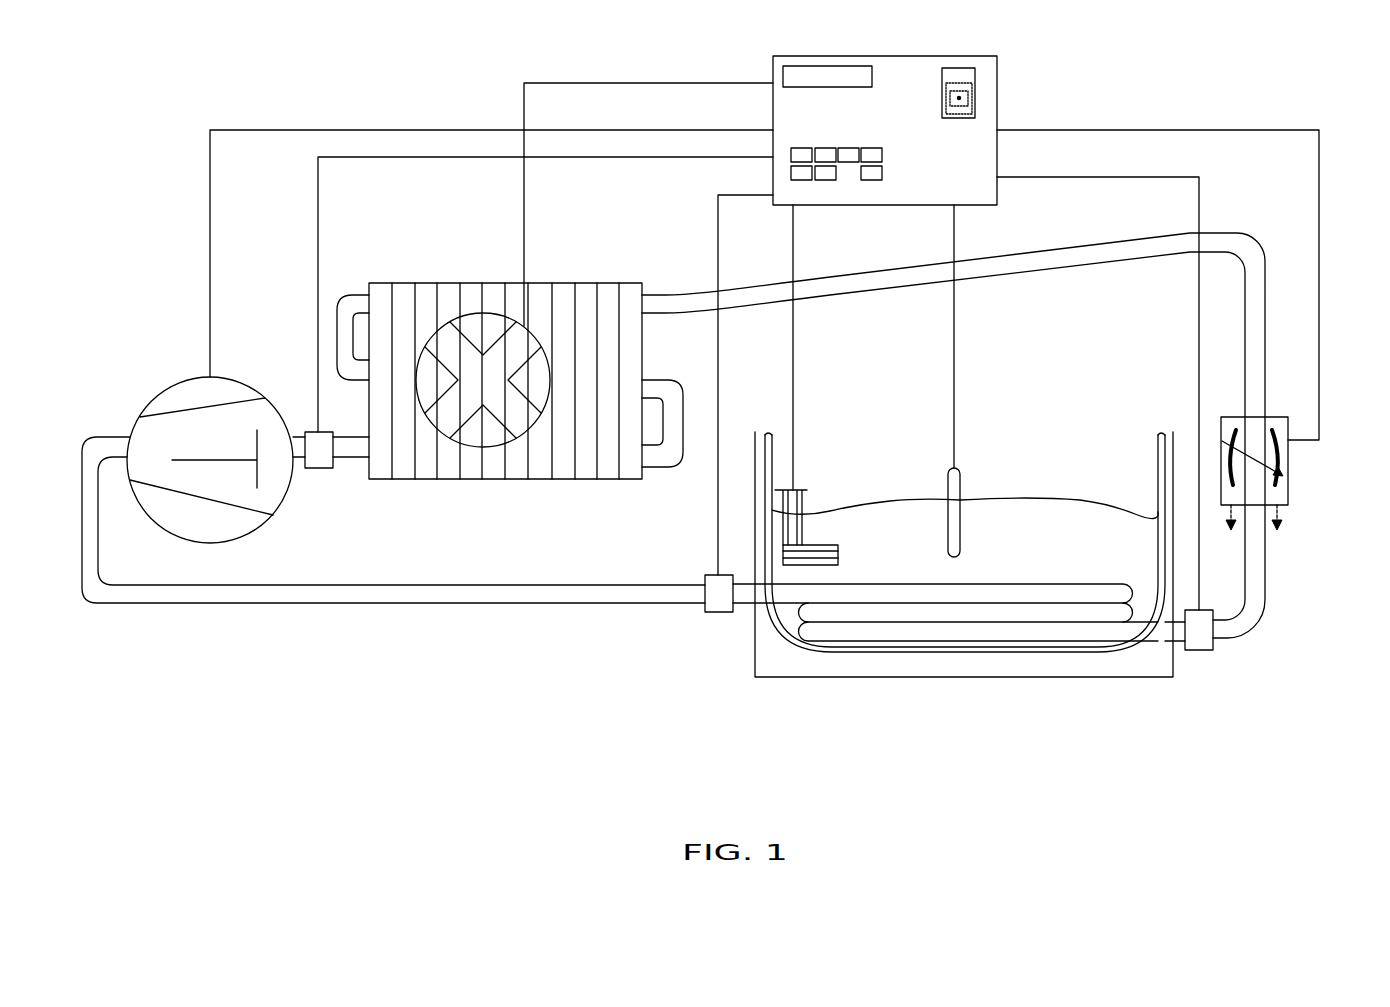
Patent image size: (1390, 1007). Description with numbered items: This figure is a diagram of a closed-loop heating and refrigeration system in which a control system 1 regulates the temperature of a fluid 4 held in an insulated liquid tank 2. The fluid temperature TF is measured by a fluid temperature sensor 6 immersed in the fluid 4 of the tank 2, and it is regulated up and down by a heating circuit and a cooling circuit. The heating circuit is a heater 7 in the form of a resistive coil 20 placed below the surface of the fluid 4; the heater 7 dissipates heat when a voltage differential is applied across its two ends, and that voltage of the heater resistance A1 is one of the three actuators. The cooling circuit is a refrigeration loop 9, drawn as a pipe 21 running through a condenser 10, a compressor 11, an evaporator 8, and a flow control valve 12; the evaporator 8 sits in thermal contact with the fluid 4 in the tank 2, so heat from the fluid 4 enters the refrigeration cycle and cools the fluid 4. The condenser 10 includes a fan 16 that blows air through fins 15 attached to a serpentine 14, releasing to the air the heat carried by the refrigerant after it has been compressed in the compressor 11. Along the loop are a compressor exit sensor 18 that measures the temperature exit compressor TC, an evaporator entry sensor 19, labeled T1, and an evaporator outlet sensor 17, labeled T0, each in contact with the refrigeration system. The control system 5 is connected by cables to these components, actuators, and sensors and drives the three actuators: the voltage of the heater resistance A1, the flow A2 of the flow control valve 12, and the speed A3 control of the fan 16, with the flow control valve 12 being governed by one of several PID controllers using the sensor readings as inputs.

The control system 1 is at (1155, 92).
The liquid tank 2 is at (808, 667).
The fluid 4 is at (1058, 566).
The control system 5 is at (999, 72).
The fluid temperature sensor 6 is at (958, 480).
The heater 7 is at (805, 506).
The evaporator 8 is at (950, 602).
The refrigeration loop 9 is at (484, 604).
The condenser 10 is at (493, 234).
The compressor 11 is at (160, 382).
The flow control valve 12 is at (1296, 472).
The serpentine 14 is at (665, 468).
The fins 15 is at (600, 368).
The fan 16 is at (483, 330).
The evaporator outlet sensor 17 is at (718, 594).
The compressor exit sensor 18 is at (373, 346).
The evaporator entry sensor 19 is at (1200, 650).
The resistive coil 20 is at (840, 558).
The pipe 21 is at (1199, 202).
The temperature exit compressor TC is at (318, 466).
The evaporator outlet sensor T0 is at (707, 617).
The evaporator entry sensor T1 is at (1200, 630).
The fluid temperature TF is at (960, 546).
The voltage of the heater resistance A1 is at (812, 545).
The flow of the flow control valve A2 is at (1290, 492).
The speed control of the fan A3 is at (492, 442).